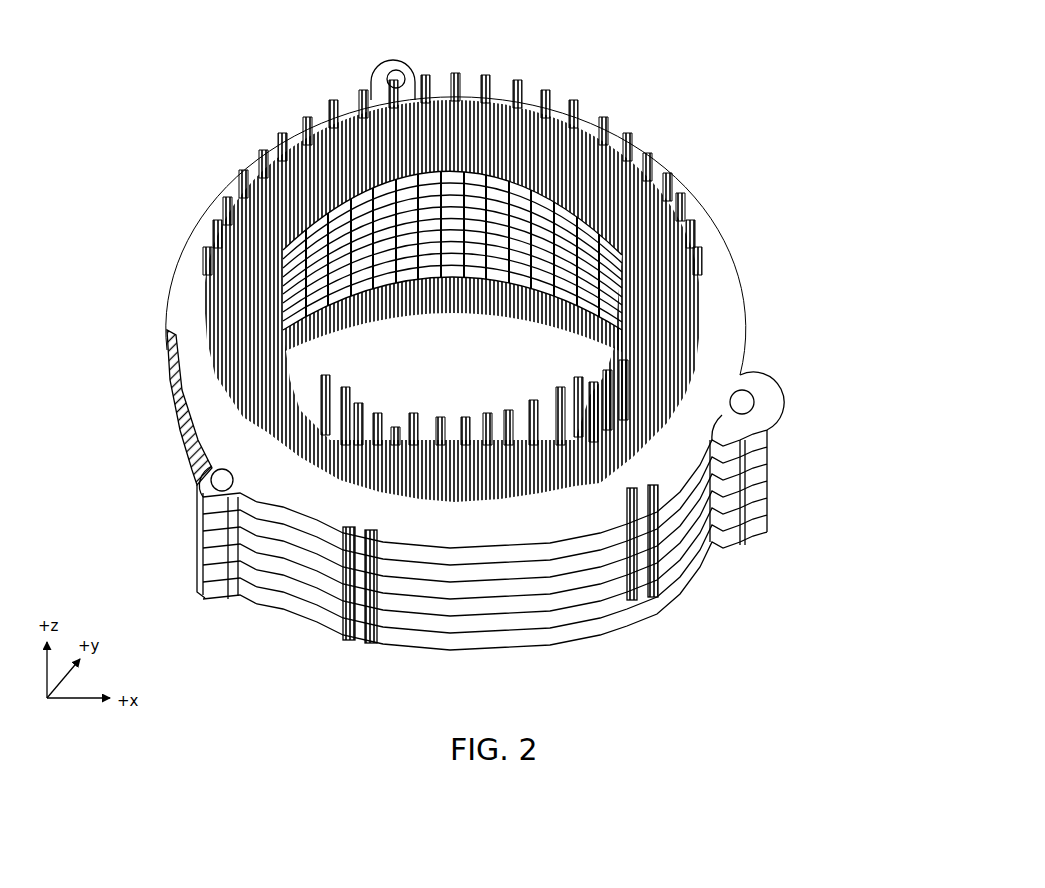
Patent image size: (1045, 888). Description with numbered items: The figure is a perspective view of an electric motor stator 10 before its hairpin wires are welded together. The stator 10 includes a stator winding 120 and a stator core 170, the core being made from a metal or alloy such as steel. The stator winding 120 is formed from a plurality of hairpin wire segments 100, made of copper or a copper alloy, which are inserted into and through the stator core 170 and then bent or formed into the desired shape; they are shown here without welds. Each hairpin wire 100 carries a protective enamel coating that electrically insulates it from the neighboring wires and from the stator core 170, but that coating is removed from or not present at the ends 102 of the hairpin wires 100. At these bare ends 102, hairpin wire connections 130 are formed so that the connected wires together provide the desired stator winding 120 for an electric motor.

The electric motor stator 10 is at (470, 339).
The hairpin wire segment 100 is at (605, 103).
The ends of the hairpin wires 102 is at (248, 163).
The hairpin wire connections 130 is at (177, 142).
The stator winding 120 is at (470, 274).
The stator core 170 is at (616, 620).